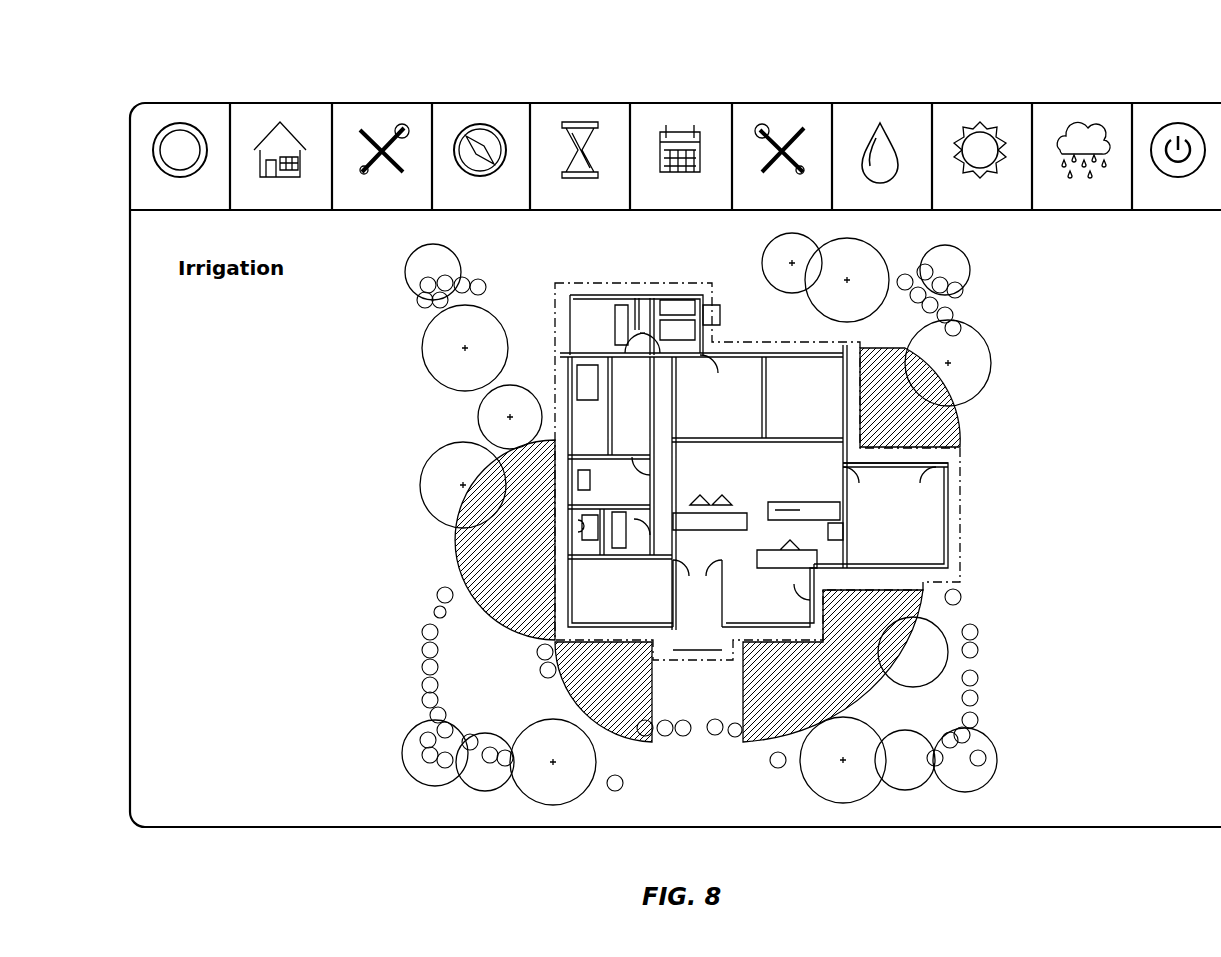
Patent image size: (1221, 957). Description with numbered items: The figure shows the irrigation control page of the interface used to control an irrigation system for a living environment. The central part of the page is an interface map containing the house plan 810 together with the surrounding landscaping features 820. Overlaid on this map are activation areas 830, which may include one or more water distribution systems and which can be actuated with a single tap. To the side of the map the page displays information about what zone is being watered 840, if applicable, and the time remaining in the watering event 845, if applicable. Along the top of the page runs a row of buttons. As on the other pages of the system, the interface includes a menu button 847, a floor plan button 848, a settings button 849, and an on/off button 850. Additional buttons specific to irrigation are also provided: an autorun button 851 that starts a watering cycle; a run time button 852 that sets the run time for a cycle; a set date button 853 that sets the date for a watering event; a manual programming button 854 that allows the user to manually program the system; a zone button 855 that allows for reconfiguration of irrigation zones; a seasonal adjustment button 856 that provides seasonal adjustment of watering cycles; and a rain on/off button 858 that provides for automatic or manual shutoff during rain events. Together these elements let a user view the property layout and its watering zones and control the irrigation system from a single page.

The house plan 810 is at (628, 285).
The landscaping features 820 is at (425, 362).
The activation areas 830 is at (452, 543).
The zone being watered information 840 is at (170, 293).
The time remaining in the watering event 845 is at (170, 314).
The menu button 847 is at (213, 212).
The floor plan button 848 is at (307, 212).
The settings button 849 is at (416, 212).
The on/off button 850 is at (1143, 120).
The autorun button 851 is at (445, 120).
The run time button 852 is at (543, 120).
The set date button 853 is at (643, 120).
The manual programming button 854 is at (743, 120).
The zone button 855 is at (843, 120).
The seasonal adjustment button 856 is at (943, 120).
The rain on/off button 858 is at (1043, 120).